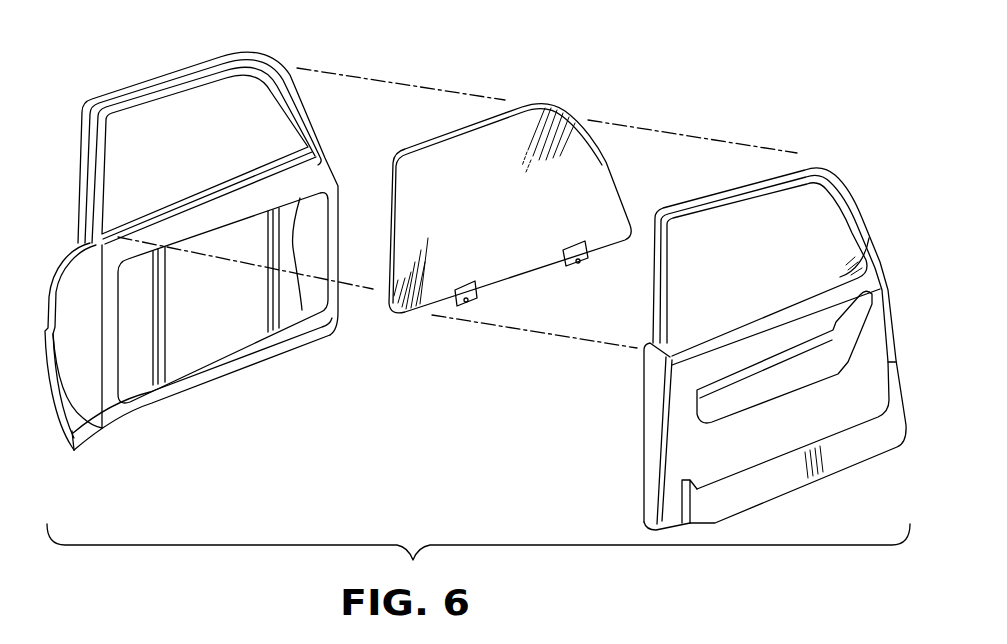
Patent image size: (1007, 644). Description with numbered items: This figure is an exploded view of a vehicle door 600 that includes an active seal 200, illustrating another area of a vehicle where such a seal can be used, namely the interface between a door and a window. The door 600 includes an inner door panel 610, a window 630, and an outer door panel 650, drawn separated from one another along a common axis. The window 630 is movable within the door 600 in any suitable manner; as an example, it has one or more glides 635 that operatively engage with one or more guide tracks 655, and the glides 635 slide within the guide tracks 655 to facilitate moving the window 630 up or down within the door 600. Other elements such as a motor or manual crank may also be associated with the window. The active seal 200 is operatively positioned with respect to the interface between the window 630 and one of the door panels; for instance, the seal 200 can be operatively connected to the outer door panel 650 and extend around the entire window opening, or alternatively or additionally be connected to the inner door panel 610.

The active seal 200 is at (230, 234).
The vehicle door 600 is at (851, 110).
The inner door panel 610 is at (843, 180).
The window 630 is at (526, 231).
The glides 635 is at (575, 265).
The outer door panel 650 is at (339, 184).
The guide tracks 655 is at (163, 372).